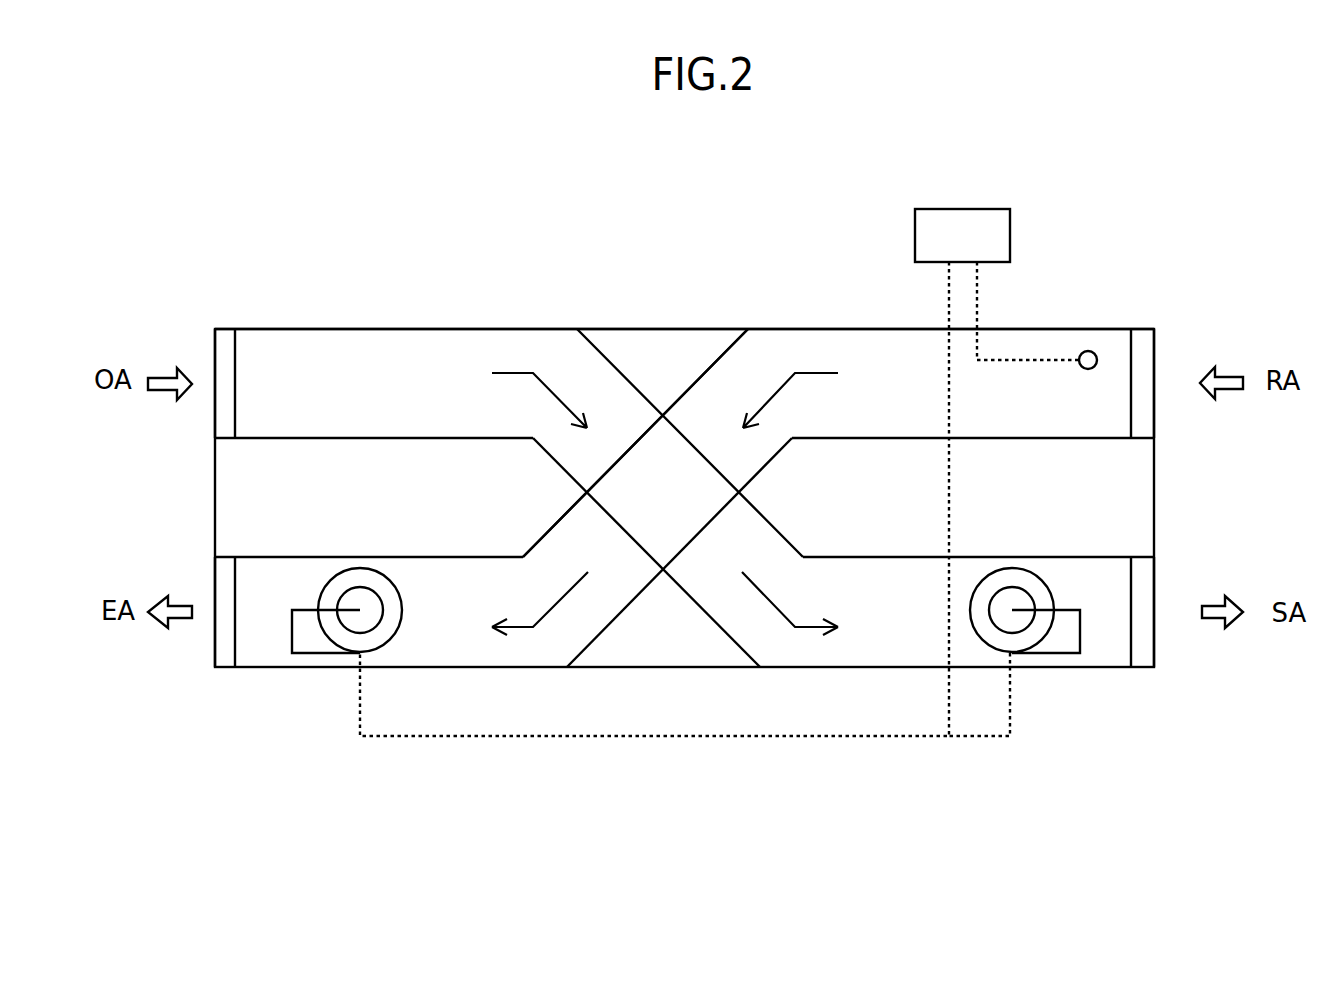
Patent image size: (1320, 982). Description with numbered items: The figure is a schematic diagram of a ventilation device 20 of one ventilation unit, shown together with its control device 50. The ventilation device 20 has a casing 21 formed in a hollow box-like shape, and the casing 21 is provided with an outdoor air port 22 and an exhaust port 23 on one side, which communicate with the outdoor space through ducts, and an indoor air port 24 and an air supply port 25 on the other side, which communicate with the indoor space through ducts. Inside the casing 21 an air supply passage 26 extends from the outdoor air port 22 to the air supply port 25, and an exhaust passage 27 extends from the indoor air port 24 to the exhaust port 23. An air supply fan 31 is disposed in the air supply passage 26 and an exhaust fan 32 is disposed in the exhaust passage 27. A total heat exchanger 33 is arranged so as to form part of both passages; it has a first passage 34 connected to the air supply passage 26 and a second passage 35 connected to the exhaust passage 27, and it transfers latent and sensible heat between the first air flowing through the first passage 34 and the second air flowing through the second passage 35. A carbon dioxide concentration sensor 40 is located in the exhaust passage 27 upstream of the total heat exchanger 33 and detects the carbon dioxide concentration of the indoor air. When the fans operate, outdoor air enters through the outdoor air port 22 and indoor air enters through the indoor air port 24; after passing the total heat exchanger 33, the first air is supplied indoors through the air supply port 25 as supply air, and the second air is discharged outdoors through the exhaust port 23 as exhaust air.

The ventilation device 20 is at (337, 270).
The casing 21 is at (542, 329).
The outdoor air port 22 is at (227, 329).
The exhaust port 23 is at (225, 668).
The indoor air port 24 is at (1143, 329).
The air supply port 25 is at (1142, 668).
The air supply passage 26 is at (427, 350).
The exhaust passage 27 is at (438, 637).
The air supply fan 31 is at (1052, 586).
The exhaust fan 32 is at (400, 590).
The total heat exchanger 33 is at (663, 498).
The first passage 34 is at (622, 457).
The second passage 35 is at (630, 537).
The carbon dioxide concentration sensor 40 is at (1088, 350).
The control device 50 is at (961, 209).